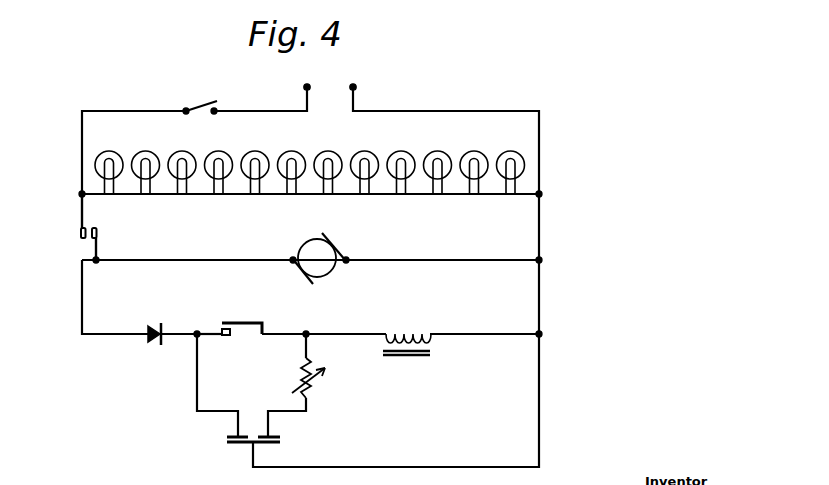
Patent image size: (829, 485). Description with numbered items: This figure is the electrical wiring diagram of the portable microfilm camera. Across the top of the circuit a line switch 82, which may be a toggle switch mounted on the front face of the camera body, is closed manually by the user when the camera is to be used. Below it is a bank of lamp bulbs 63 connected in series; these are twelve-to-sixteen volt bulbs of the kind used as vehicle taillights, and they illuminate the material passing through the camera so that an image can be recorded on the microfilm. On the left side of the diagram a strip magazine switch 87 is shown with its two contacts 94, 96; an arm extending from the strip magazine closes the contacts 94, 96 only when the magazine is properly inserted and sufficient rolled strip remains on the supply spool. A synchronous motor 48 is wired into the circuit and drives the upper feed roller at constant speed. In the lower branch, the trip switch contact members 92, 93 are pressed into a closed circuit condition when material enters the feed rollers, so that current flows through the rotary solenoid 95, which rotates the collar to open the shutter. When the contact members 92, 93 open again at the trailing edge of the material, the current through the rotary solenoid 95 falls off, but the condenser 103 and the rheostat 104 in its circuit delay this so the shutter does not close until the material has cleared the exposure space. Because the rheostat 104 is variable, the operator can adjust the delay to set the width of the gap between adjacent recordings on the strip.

The line switch 82 is at (207, 100).
The lamp bulbs 63 is at (286, 153).
The contact 94 is at (80, 210).
The strip magazine switch 87 is at (72, 237).
The contact 96 is at (97, 244).
The synchronous motor 48 is at (325, 270).
The contact member 92 is at (241, 322).
The contact member 93 is at (213, 338).
The rotary solenoid 95 is at (436, 344).
The rheostat 104 is at (313, 385).
The condenser 103 is at (285, 441).